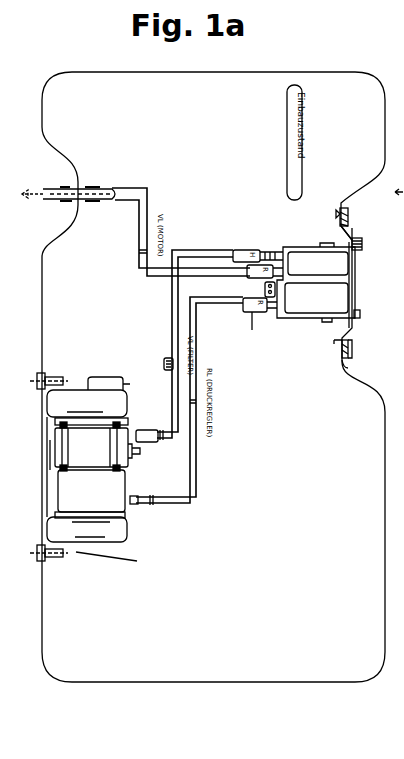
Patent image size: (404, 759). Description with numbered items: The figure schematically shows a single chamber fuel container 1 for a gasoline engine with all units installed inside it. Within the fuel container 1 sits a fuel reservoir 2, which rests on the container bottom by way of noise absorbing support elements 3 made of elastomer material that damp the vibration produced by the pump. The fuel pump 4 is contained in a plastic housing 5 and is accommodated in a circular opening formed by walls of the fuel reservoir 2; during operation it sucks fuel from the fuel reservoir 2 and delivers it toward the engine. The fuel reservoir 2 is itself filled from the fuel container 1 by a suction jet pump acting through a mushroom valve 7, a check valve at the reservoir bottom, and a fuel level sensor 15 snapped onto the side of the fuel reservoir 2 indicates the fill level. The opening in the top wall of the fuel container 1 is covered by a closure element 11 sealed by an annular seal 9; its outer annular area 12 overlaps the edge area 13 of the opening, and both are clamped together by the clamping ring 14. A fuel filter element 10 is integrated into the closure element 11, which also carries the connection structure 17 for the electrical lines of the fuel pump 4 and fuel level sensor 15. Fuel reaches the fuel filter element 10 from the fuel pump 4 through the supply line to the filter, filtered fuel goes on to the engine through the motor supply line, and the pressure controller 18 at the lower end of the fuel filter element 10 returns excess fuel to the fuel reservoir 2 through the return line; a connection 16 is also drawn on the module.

The fuel container 1 is at (222, 684).
The fuel reservoir 2 is at (84, 390).
The noise absorbing support elements 3 is at (57, 557).
The fuel pump 4 is at (125, 452).
The plastic housing 5 is at (123, 503).
The mushroom valve 7 is at (46, 457).
The annular seal 9 is at (338, 348).
The fuel filter element 10 is at (300, 262).
The closure element 11 is at (355, 283).
The outer annular area 12 is at (349, 233).
The edge area 13 is at (327, 220).
The clamping ring 14 is at (349, 347).
The fuel level sensor 15 is at (164, 363).
The return line connection 16 is at (268, 337).
The connection structure 17 is at (364, 246).
The pressure controller 18 is at (264, 302).